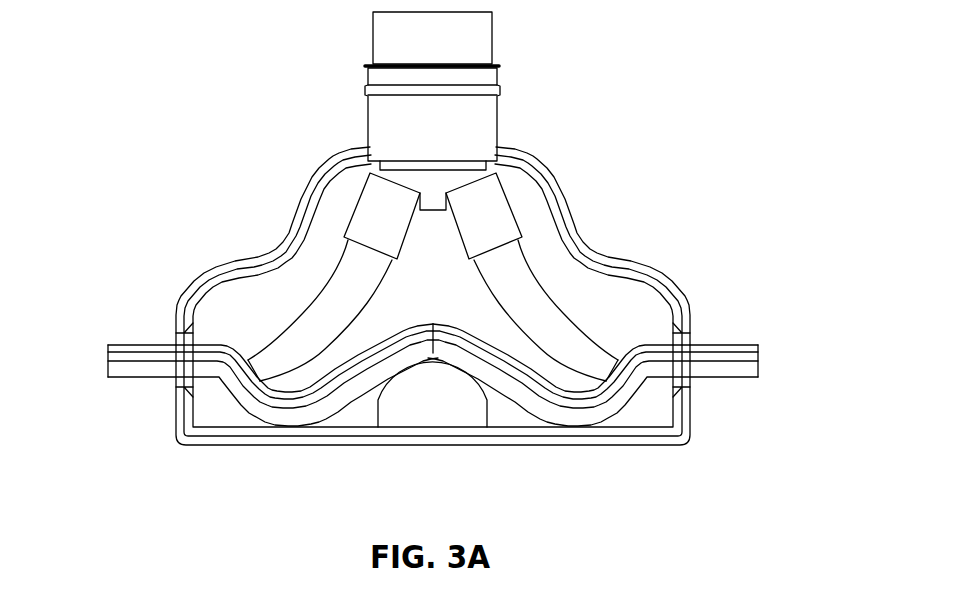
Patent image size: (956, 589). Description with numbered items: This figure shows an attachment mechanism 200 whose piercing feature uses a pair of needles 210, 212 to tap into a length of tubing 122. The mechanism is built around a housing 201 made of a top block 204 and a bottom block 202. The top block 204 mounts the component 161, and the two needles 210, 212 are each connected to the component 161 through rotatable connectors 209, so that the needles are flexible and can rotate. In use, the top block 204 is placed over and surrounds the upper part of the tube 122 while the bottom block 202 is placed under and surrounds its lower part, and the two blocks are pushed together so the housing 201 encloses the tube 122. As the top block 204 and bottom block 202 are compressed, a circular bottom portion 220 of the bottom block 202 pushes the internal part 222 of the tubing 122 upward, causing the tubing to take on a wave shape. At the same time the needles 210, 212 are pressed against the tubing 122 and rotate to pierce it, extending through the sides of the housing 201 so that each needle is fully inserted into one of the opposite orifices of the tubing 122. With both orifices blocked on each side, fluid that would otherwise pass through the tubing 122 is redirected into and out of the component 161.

The attachment mechanism 200 is at (183, 75).
The housing 201 is at (725, 298).
The bottom block 202 is at (692, 432).
The top block 204 is at (640, 263).
The component 161 is at (494, 50).
The rotatable connectors 209 is at (357, 203).
The needle 210 is at (293, 318).
The needle 212 is at (535, 280).
The tubing 122 is at (127, 343).
The internal part of tubing 222 is at (275, 405).
The circular bottom portion 220 is at (437, 413).